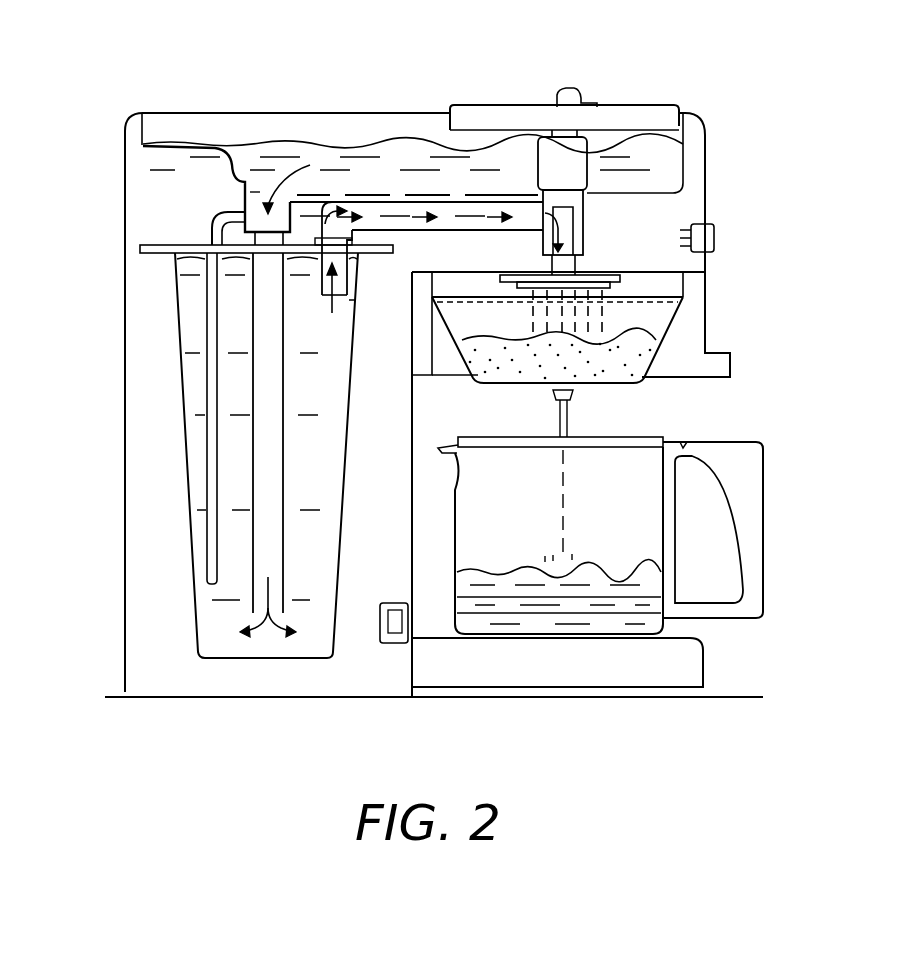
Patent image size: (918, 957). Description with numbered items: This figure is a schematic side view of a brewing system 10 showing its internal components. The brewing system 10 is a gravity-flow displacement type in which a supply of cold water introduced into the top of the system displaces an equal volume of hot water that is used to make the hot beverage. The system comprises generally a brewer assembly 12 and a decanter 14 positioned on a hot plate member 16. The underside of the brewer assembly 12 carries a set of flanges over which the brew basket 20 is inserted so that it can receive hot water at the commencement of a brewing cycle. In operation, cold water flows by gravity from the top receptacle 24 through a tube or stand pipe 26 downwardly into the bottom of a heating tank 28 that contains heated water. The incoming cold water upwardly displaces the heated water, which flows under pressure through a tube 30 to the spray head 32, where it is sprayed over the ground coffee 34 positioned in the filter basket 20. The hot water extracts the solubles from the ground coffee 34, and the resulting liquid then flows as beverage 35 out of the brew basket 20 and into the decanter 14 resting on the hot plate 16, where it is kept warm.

The brewing system 10 is at (766, 84).
The brewer assembly 12 is at (705, 190).
The decanter 14 is at (622, 470).
The hot plate member 16 is at (705, 652).
The brew basket 20 is at (668, 318).
The top receptacle 24 is at (687, 153).
The stand pipe 26 is at (250, 392).
The heating tank 28 is at (193, 562).
The tube 30 is at (320, 280).
The spray head 32 is at (610, 284).
The ground coffee 34 is at (640, 360).
The beverage 35 is at (616, 572).